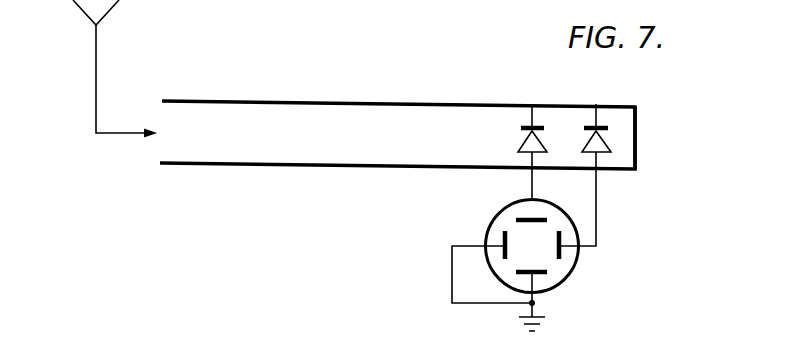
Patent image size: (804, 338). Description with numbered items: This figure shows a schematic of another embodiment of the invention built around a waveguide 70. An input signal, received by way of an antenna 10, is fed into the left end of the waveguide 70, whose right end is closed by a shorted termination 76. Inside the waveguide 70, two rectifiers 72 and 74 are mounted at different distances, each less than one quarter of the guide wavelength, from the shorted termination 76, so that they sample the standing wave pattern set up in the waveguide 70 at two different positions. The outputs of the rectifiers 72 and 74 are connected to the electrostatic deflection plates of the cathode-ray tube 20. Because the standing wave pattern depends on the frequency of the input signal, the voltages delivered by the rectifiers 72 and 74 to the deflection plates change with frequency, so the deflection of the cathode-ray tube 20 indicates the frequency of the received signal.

The antenna 10 is at (79, 7).
The waveguide 70 is at (299, 100).
The rectifier 72 is at (605, 145).
The rectifier 74 is at (520, 145).
The shorted termination 76 is at (637, 152).
The cathode-ray tube 20 is at (582, 278).